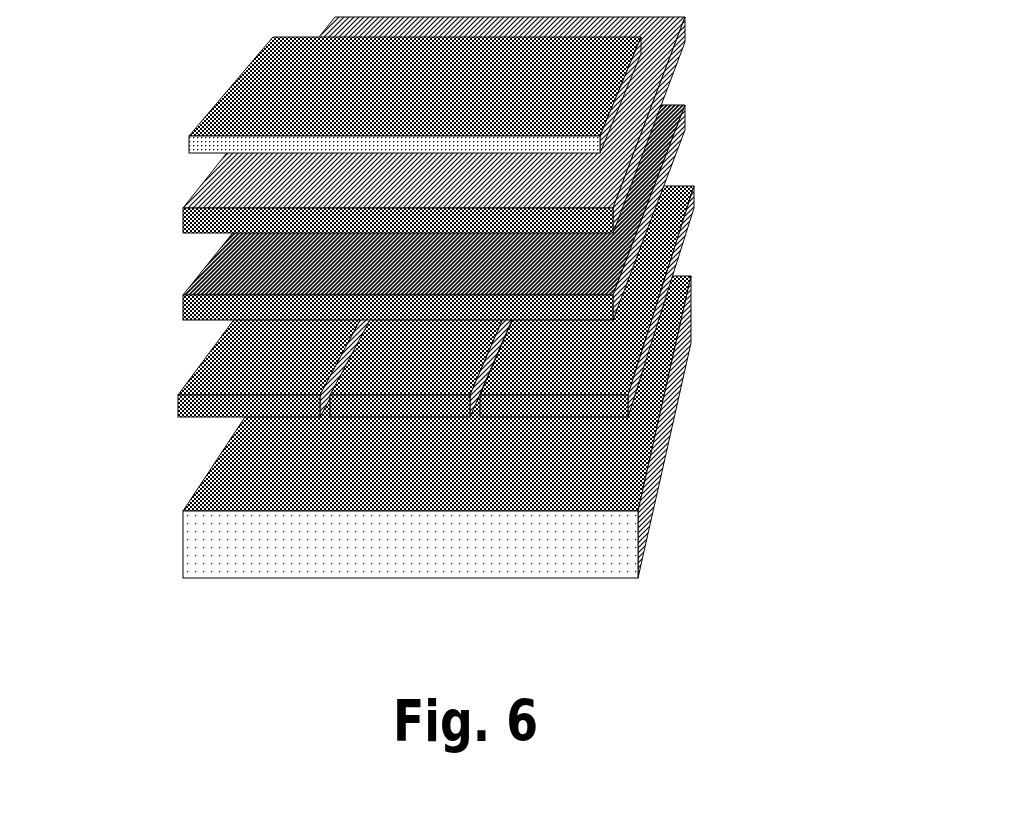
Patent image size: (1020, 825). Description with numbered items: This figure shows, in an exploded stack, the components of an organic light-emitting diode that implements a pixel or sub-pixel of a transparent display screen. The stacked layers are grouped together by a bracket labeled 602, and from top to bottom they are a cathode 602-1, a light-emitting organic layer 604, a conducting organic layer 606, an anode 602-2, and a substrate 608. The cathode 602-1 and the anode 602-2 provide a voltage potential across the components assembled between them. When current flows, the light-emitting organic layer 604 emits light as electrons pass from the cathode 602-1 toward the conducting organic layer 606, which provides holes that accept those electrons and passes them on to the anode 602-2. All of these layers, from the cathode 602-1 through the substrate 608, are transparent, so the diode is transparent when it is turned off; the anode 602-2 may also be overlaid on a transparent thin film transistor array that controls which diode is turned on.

The touch sensor stack 602 is at (452, 297).
The cathode 602-1 is at (215, 136).
The light-emitting organic layer 604 is at (215, 211).
The conducting organic layer 606 is at (215, 298).
The anode 602-2 is at (215, 395).
The substrate 608 is at (197, 536).